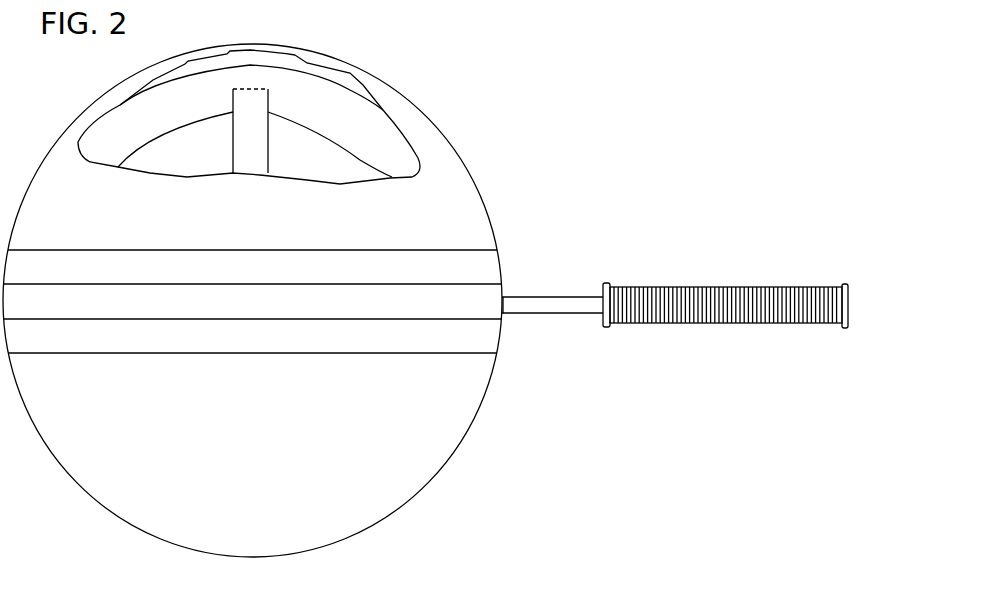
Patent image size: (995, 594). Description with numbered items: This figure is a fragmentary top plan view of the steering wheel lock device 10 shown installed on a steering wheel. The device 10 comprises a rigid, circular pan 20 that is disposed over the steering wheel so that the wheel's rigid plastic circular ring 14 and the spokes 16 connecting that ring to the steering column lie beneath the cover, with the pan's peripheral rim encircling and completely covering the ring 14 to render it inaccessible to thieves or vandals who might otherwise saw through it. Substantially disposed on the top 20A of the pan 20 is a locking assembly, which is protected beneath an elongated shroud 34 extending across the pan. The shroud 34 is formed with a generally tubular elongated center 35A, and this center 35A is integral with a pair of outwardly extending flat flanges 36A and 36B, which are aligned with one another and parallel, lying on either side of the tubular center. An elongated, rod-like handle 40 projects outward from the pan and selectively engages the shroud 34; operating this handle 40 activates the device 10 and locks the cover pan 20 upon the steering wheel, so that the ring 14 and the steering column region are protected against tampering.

The device 10 is at (560, 70).
The circular ring 14 is at (319, 97).
The spokes 16 is at (253, 137).
The pan 20 is at (465, 487).
The top of pan 20A is at (286, 491).
The shroud 34 is at (393, 243).
The tubular elongated center 35A is at (412, 308).
The flat flange 36A is at (218, 267).
The flat flange 36B is at (103, 337).
The handle 40 is at (707, 272).